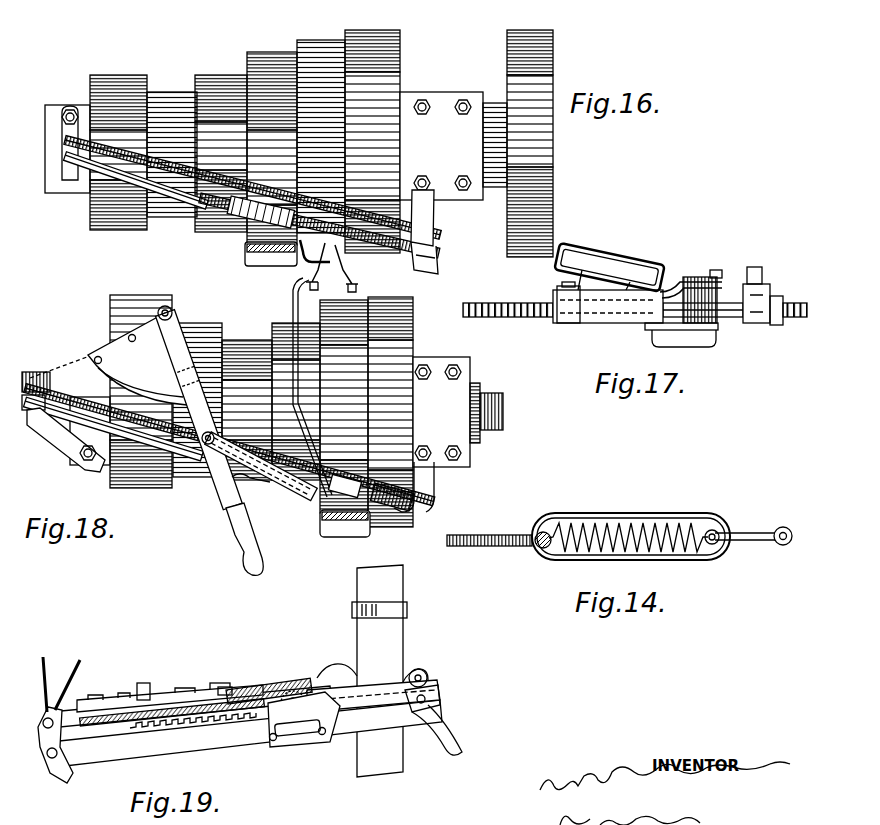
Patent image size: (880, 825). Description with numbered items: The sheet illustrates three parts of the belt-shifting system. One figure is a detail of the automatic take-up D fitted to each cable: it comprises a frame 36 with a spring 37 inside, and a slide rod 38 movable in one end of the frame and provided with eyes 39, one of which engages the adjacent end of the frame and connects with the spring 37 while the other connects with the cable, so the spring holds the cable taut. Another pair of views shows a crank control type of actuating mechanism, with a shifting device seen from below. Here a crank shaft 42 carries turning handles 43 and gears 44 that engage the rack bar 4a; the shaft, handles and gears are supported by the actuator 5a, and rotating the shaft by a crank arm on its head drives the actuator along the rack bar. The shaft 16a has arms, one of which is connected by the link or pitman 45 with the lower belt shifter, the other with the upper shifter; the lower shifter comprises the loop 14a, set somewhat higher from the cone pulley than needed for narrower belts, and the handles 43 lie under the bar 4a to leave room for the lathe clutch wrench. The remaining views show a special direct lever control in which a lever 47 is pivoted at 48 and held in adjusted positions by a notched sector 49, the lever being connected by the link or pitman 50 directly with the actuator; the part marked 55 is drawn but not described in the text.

In FIG. 16, the rack bar 4a is at (90, 188).
In FIG. 17, the rack bar 4a is at (535, 317).
In FIG. 16, the actuator 5a is at (243, 226).
In FIG. 17, the actuator 5a is at (782, 294).
In FIG. 16, the loop 14a is at (258, 263).
In FIG. 17, the loop 14a is at (577, 243).
In FIG. 17, the shaft 16a is at (706, 342).
In FIG. 14, the frame 36 is at (655, 514).
In FIG. 14, the spring 37 is at (604, 526).
In FIG. 14, the slide rod 38 is at (745, 541).
In FIG. 14, the eyes 39 is at (710, 546).
In FIG. 16, the crank shaft 42 is at (354, 226).
In FIG. 17, the crank shaft 42 is at (763, 270).
In FIG. 16, the turning handles 43 is at (338, 262).
In FIG. 17, the gears 44 is at (710, 292).
In FIG. 16, the link or pitman 45 is at (306, 262).
In FIG. 17, the link or pitman 45 is at (679, 286).
In FIG. 18, the lever 47 is at (226, 500).
In FIG. 19, the lever 47 is at (204, 688).
In FIG. 18, the pivot 48 is at (175, 310).
In FIG. 19, the pivot 48 is at (148, 683).
In FIG. 18, the sector 49 is at (137, 359).
In FIG. 19, the sector 49 is at (112, 700).
In FIG. 18, the link or pitman 50 is at (212, 463).
In FIG. 19, the link or pitman 50 is at (245, 692).
In FIG. 18, the link 55 is at (236, 480).
In FIG. 19, the link 55 is at (300, 738).
In FIG. 14, the automatic take-up D is at (631, 519).